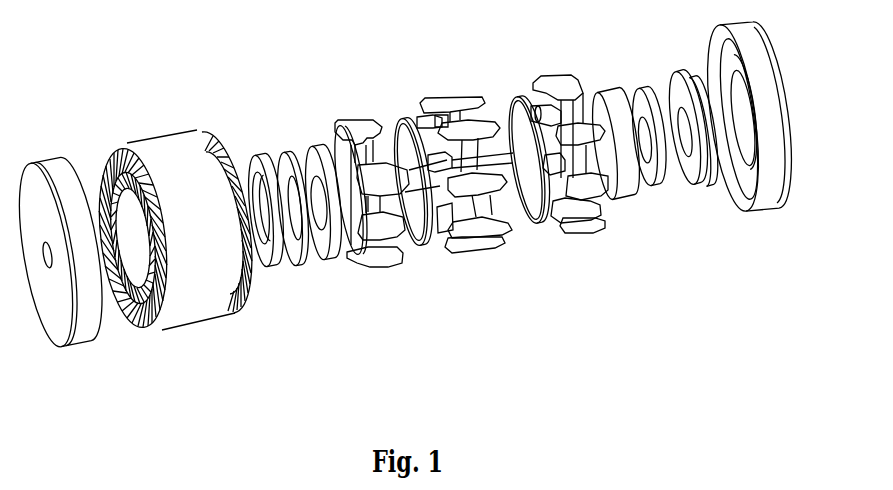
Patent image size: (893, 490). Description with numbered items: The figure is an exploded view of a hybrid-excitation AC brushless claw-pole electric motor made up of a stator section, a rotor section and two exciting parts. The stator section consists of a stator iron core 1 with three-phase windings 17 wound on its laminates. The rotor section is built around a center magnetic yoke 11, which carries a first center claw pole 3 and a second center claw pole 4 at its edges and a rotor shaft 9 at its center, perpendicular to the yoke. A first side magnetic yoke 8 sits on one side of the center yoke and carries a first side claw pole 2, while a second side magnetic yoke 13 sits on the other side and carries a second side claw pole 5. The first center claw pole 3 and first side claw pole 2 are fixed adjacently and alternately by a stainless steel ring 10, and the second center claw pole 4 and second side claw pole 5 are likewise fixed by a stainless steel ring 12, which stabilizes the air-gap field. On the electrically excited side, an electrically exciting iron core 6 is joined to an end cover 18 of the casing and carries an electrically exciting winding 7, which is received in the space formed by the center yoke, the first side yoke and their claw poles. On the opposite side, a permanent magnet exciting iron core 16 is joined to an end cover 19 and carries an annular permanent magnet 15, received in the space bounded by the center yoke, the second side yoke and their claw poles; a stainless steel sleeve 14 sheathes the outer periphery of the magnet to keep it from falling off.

The stator iron core 1 is at (163, 133).
The first side claw pole 2 is at (382, 130).
The first center claw pole 3 is at (423, 107).
The second center claw pole 4 is at (482, 98).
The second side claw pole 5 is at (547, 100).
The electrically exciting iron core 6 is at (290, 267).
The electrically exciting winding 7 is at (345, 253).
The first side magnetic yoke 8 is at (370, 250).
The rotor shaft 9 is at (408, 237).
The stainless steel ring 10 is at (430, 250).
The center magnetic yoke 11 is at (480, 207).
The stainless steel ring 12 is at (543, 227).
The second side magnetic yoke 13 is at (598, 225).
The stainless steel sleeve 14 is at (630, 190).
The annular permanent magnet 15 is at (670, 175).
The permanent magnet exciting iron core 16 is at (705, 187).
The three-phase windings 17 is at (157, 320).
The end cover 18 is at (50, 153).
The end cover 19 is at (768, 210).